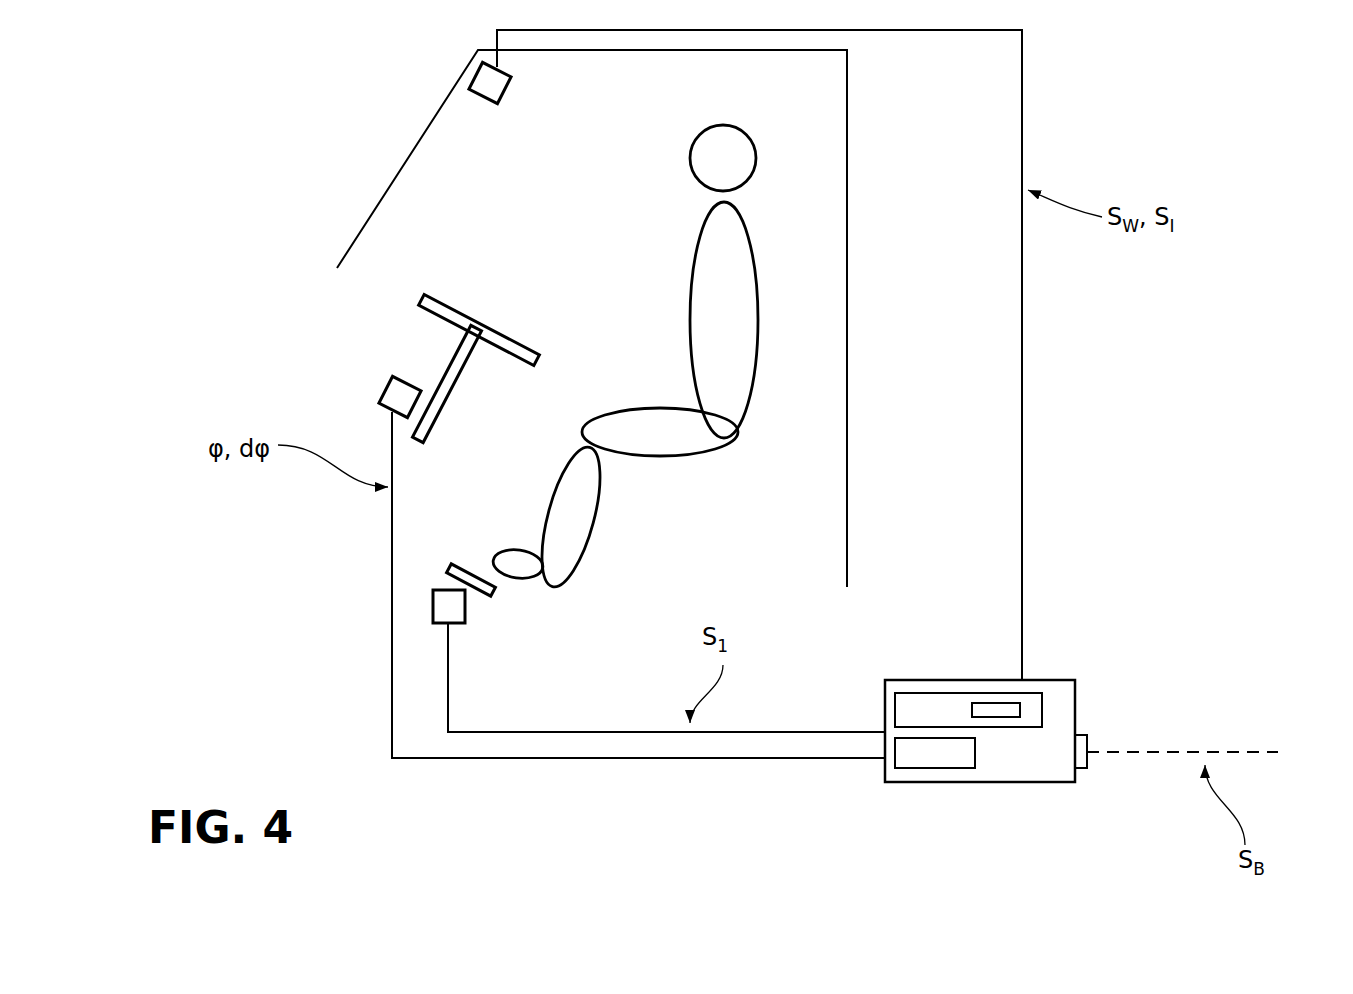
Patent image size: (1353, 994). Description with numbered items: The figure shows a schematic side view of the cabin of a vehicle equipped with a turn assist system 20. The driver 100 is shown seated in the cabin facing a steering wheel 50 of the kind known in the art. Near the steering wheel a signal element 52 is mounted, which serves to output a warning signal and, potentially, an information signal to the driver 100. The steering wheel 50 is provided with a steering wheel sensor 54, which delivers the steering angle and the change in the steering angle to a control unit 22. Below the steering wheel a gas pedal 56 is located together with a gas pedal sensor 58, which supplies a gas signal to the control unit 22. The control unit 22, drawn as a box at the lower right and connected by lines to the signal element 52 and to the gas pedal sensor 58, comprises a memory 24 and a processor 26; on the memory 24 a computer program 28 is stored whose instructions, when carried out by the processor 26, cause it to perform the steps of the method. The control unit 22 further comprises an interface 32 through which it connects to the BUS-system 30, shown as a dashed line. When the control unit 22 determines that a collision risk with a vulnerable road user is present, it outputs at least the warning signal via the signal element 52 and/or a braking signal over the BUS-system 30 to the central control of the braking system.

The turn assist system 20 is at (1178, 583).
The control unit 22 is at (1086, 702).
The memory 24 is at (909, 710).
The processor 26 is at (964, 754).
The computer program 28 is at (997, 712).
The BUS-system 30 is at (1265, 746).
The interface 32 is at (1096, 746).
The steering wheel 50 is at (422, 293).
The signal element 52 is at (510, 94).
The steering wheel sensor 54 is at (388, 393).
The gas pedal 56 is at (504, 590).
The gas pedal sensor 58 is at (472, 613).
The driver 100 is at (775, 143).